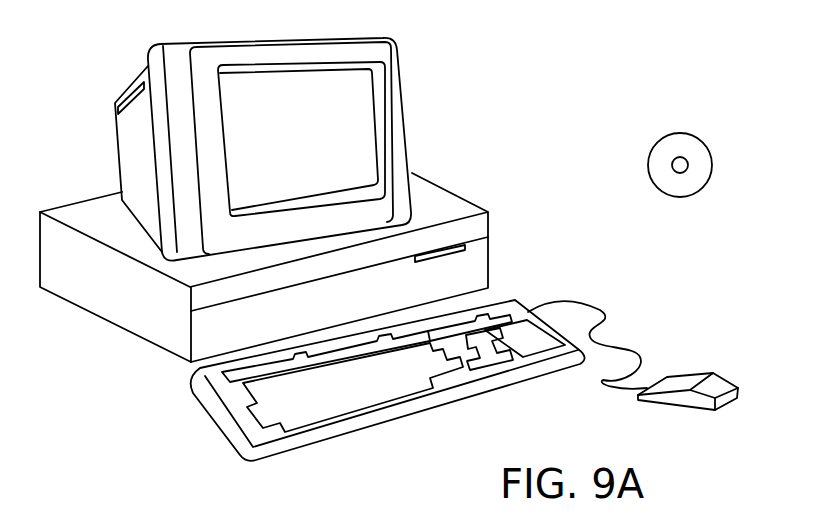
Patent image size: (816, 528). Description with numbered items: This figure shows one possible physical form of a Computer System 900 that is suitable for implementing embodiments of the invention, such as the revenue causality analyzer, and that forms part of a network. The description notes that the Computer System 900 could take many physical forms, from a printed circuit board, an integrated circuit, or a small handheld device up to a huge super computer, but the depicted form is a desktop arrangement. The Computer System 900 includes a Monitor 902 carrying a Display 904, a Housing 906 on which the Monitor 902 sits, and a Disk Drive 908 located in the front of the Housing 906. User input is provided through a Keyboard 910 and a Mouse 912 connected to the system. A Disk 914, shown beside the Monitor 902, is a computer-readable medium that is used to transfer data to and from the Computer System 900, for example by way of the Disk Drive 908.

The computer system 900 is at (570, 116).
The monitor 902 is at (406, 147).
The display 904 is at (371, 100).
The housing 906 is at (157, 345).
The disk drive 908 is at (465, 243).
The keyboard 910 is at (380, 418).
The mouse 912 is at (728, 378).
The disk 914 is at (697, 135).